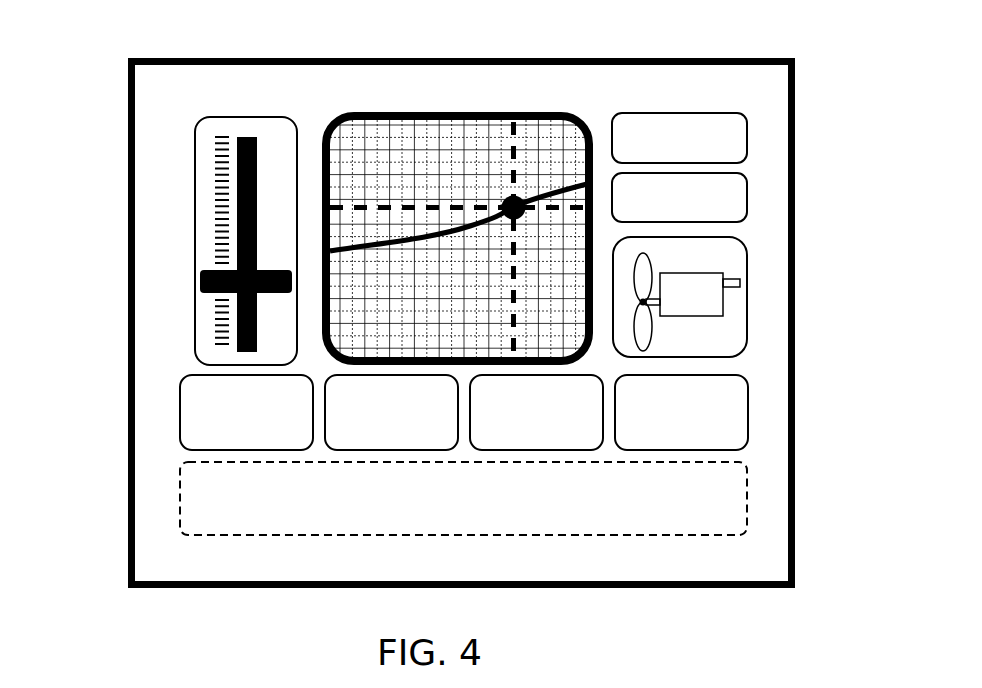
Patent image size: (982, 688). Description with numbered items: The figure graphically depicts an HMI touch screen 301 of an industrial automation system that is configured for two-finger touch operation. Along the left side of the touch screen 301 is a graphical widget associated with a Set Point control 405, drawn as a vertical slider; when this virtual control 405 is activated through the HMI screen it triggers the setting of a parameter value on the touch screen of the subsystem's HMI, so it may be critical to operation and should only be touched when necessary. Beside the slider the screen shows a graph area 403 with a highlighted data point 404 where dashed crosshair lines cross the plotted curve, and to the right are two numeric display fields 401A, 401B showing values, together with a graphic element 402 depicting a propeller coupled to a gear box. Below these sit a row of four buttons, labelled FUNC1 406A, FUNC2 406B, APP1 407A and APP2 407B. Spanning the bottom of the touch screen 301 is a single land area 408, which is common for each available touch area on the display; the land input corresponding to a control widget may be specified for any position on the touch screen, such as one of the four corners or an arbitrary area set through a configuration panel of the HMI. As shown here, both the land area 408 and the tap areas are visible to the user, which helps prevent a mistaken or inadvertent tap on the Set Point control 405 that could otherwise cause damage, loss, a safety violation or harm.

The HMI touch screen 301 is at (172, 120).
The first numeric value display field 401A is at (748, 140).
The second numeric value display field 401B is at (748, 198).
The gear/propeller graphic element 402 is at (748, 298).
The graph display area 403 is at (440, 113).
The data point marker on graph 404 is at (518, 197).
The Set Point control 405 is at (193, 233).
The first function button FUNC1 406A is at (277, 438).
The second function button FUNC2 406B is at (422, 438).
The first application button APP1 407A is at (567, 438).
The second application button APP2 407B is at (712, 438).
The land area 408 is at (483, 517).